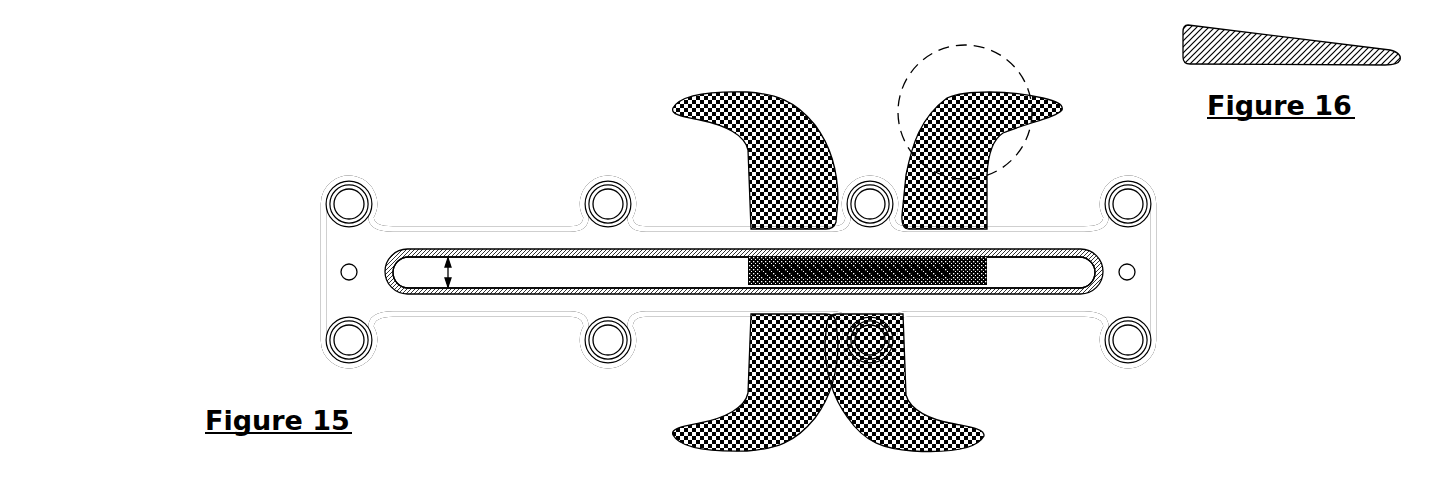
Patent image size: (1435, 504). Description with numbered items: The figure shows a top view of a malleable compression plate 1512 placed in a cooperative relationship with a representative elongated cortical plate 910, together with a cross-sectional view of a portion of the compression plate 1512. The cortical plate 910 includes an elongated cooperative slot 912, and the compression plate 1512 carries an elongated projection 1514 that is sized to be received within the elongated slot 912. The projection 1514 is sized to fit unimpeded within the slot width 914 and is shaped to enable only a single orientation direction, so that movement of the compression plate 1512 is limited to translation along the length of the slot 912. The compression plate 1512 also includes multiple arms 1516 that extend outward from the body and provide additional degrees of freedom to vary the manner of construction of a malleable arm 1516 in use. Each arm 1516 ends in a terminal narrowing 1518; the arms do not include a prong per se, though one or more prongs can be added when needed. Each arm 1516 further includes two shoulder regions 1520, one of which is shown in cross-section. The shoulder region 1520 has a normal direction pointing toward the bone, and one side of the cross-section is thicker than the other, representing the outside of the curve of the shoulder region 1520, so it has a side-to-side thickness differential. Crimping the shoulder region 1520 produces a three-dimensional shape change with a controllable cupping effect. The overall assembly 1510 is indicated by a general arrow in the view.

The cortical plate 910 is at (1154, 308).
The elongated slot 912 is at (522, 274).
The slot width 914 is at (454, 262).
The plate assembly 1510 is at (278, 207).
The compression plate 1512 is at (998, 270).
The elongated projection 1514 is at (742, 256).
The arm 1516 is at (703, 92).
The terminal narrowing 1518 is at (677, 432).
The shoulder region 1520 is at (910, 68).